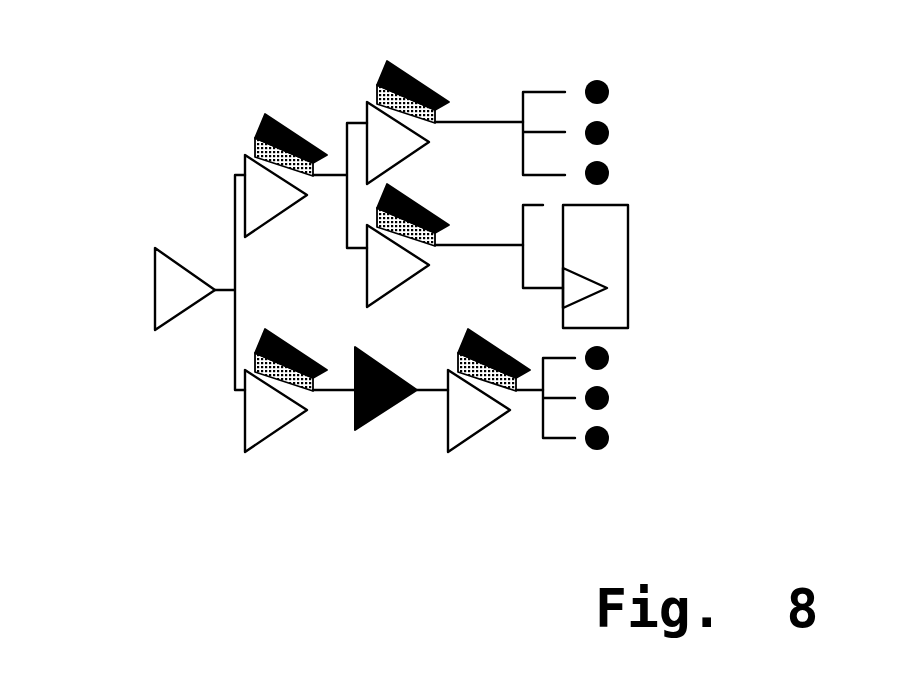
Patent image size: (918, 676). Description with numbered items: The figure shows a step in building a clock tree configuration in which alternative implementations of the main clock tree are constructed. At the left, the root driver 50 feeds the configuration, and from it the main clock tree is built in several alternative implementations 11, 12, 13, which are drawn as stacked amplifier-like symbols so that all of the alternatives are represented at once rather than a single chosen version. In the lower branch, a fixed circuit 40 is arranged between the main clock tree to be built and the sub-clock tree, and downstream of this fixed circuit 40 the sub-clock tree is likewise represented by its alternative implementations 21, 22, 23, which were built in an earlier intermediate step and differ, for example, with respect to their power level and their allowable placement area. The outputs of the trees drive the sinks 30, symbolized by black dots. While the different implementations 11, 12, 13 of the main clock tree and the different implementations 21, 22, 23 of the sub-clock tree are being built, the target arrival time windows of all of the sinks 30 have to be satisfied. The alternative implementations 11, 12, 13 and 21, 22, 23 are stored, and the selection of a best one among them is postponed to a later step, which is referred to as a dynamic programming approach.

The alternative implementation of the main clock tree 11 is at (257, 203).
The alternative implementation of the main clock tree 12 is at (258, 138).
The alternative implementation of the main clock tree 13 is at (293, 128).
The alternative implementation of the sub-clock tree 21 is at (468, 408).
The alternative implementation of the sub-clock tree 22 is at (498, 378).
The alternative implementation of the sub-clock tree 23 is at (517, 382).
The sinks 30 is at (630, 151).
The fixed circuit 40 is at (390, 415).
The root driver 50 is at (147, 288).